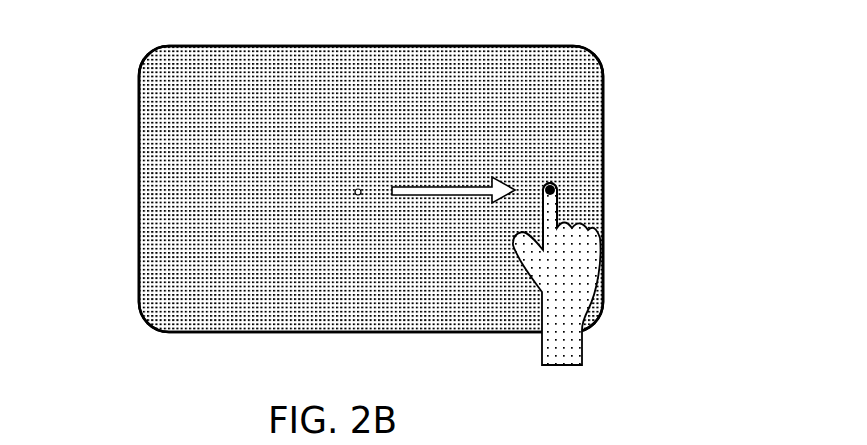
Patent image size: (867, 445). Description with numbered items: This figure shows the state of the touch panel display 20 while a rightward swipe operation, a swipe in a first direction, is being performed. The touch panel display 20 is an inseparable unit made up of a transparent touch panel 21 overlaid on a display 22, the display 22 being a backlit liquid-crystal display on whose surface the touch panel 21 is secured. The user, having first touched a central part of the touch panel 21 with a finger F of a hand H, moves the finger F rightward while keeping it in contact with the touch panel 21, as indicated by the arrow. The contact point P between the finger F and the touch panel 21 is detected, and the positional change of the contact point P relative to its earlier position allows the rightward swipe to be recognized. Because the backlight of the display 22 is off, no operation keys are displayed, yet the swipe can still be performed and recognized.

The touch panel display 20 is at (306, 189).
The touch panel 21 is at (139, 105).
The display 22 is at (62, 97).
The contact point P is at (555, 184).
The finger F is at (557, 203).
The hand H is at (582, 272).